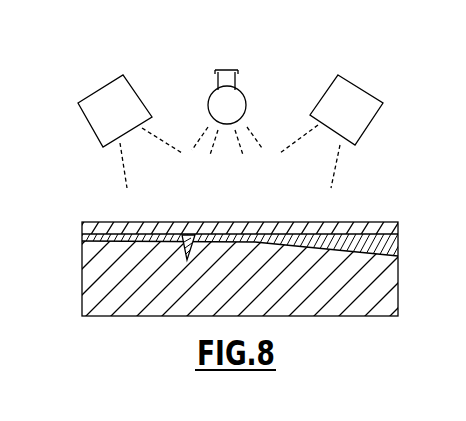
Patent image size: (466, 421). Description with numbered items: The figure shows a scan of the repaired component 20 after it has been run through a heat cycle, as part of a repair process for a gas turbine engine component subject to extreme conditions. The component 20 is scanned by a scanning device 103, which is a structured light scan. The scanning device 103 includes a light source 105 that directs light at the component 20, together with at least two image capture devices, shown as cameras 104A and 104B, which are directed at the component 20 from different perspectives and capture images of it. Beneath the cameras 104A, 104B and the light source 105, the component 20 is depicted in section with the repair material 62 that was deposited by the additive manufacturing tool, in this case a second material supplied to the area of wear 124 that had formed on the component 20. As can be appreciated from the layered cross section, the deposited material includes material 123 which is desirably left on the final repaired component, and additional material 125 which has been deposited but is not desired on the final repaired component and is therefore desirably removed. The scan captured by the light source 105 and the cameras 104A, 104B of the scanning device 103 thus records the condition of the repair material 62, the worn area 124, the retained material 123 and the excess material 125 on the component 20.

The component 20 is at (71, 208).
The repair material 62 is at (187, 237).
The scanning device 103 is at (294, 70).
The first camera 104A is at (100, 107).
The second camera 104B is at (358, 105).
The light source 105 is at (218, 80).
The material desirably left 123 is at (398, 247).
The area of wear 124 is at (343, 247).
The additional material 125 is at (380, 230).